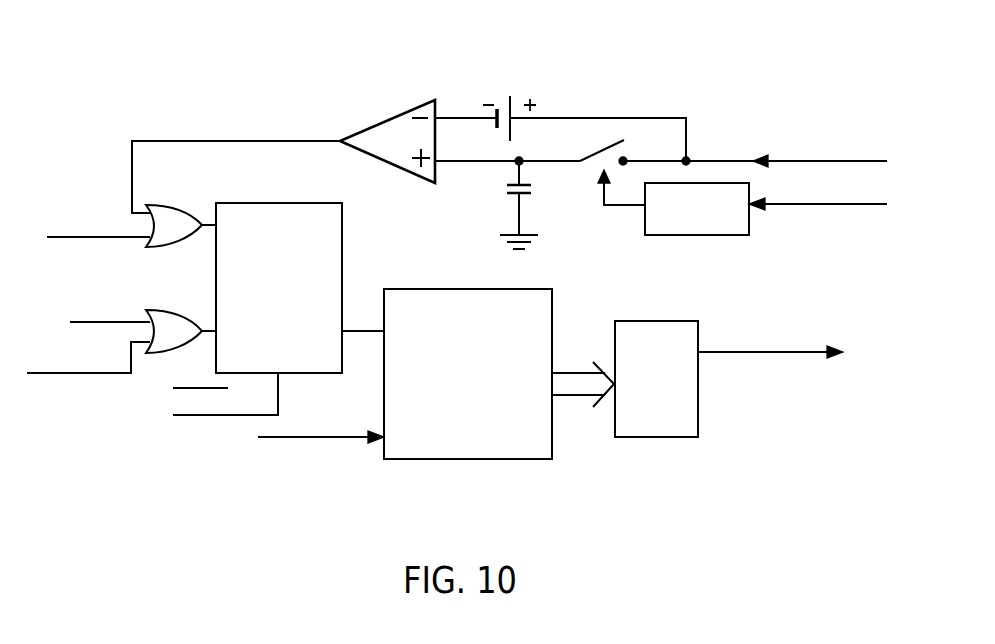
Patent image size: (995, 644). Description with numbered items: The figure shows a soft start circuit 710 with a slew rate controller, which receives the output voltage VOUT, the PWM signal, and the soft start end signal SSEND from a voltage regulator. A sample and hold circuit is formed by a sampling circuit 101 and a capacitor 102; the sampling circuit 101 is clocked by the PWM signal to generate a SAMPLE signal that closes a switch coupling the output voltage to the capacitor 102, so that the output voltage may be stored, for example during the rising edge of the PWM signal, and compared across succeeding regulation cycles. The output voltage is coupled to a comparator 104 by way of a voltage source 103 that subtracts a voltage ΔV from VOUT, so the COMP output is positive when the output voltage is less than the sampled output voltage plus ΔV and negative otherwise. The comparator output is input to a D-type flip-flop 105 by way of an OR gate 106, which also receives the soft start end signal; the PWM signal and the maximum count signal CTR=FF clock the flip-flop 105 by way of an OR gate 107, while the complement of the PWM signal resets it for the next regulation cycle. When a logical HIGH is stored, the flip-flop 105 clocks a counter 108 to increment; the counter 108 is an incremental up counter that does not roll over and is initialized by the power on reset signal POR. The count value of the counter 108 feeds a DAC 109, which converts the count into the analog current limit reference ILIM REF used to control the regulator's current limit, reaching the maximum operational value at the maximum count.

The soft start circuit 710 is at (102, 92).
The sampling circuit 101 is at (673, 236).
The capacitor 102 is at (541, 205).
The voltage source 103 is at (560, 111).
The comparator 104 is at (389, 115).
The D-type flip-flop 105 is at (255, 203).
The OR gate 106 is at (161, 205).
The OR gate 107 is at (171, 310).
The counter 108 is at (487, 289).
The DAC 109 is at (652, 321).